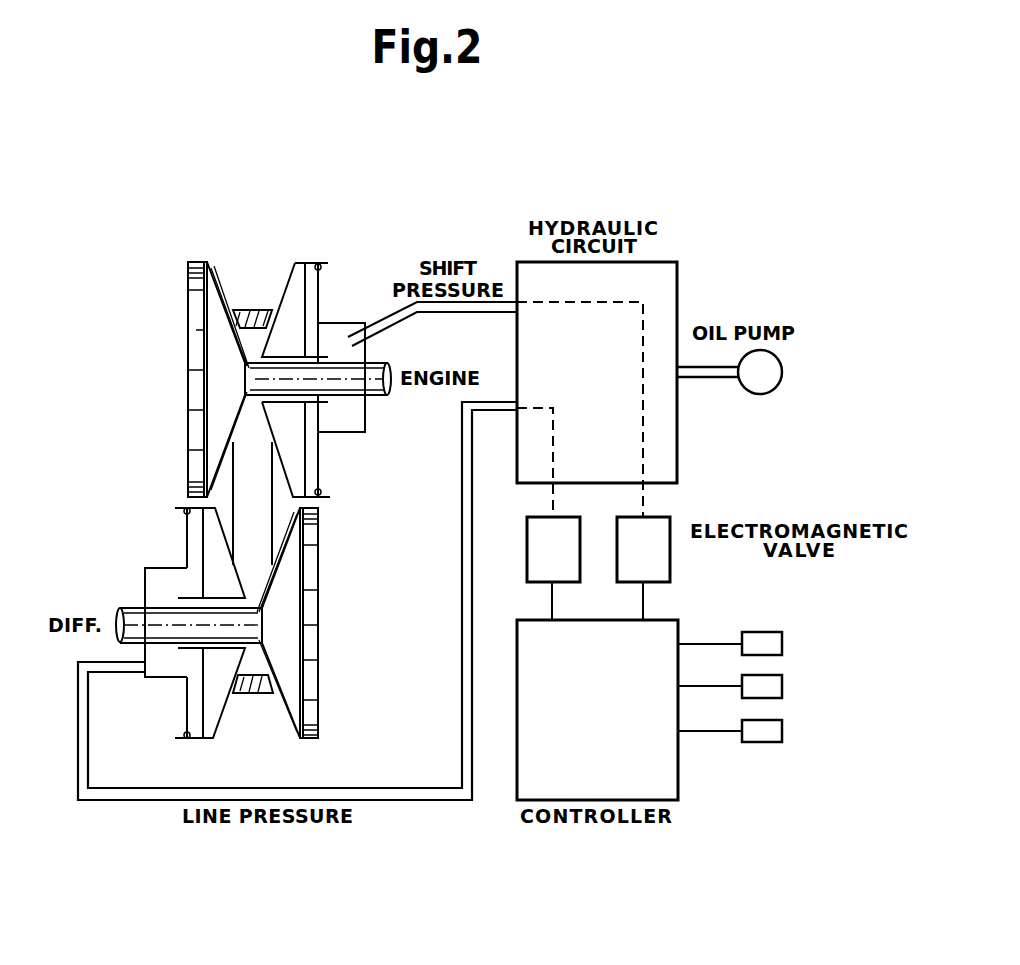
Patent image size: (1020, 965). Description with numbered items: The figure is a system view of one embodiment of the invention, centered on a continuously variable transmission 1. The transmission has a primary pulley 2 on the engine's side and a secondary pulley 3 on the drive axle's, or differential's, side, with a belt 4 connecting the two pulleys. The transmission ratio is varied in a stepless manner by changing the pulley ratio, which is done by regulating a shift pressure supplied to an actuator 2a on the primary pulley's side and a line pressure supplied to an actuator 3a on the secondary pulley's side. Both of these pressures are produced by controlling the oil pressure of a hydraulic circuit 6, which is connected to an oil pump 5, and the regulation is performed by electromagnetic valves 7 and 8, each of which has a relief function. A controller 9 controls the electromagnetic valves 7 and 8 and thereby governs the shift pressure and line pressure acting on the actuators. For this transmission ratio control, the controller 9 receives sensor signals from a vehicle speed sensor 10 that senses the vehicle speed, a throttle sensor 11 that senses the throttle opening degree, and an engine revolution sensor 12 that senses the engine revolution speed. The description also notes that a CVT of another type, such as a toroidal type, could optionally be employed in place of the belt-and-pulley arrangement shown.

The continuously variable transmission 1 is at (158, 341).
The primary pulley 2 is at (288, 282).
The actuator 2a is at (337, 333).
The secondary pulley 3 is at (223, 710).
The actuator 3a is at (167, 660).
The belt 4 is at (248, 482).
The oil pump 5 is at (760, 395).
The hydraulic circuit 6 is at (678, 276).
The electromagnetic valve 7 is at (670, 537).
The electromagnetic valve 8 is at (527, 530).
The controller 9 is at (678, 762).
The vehicle speed sensor 10 is at (785, 645).
The throttle sensor 11 is at (785, 688).
The engine revolution sensor 12 is at (785, 733).